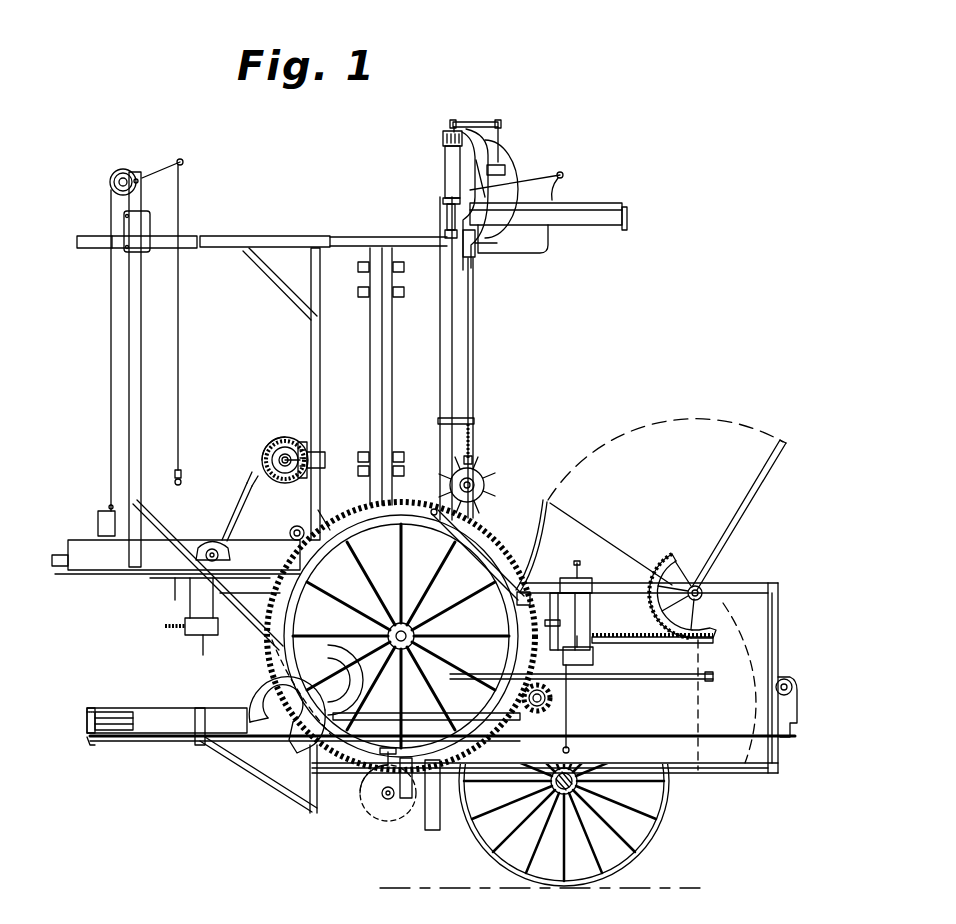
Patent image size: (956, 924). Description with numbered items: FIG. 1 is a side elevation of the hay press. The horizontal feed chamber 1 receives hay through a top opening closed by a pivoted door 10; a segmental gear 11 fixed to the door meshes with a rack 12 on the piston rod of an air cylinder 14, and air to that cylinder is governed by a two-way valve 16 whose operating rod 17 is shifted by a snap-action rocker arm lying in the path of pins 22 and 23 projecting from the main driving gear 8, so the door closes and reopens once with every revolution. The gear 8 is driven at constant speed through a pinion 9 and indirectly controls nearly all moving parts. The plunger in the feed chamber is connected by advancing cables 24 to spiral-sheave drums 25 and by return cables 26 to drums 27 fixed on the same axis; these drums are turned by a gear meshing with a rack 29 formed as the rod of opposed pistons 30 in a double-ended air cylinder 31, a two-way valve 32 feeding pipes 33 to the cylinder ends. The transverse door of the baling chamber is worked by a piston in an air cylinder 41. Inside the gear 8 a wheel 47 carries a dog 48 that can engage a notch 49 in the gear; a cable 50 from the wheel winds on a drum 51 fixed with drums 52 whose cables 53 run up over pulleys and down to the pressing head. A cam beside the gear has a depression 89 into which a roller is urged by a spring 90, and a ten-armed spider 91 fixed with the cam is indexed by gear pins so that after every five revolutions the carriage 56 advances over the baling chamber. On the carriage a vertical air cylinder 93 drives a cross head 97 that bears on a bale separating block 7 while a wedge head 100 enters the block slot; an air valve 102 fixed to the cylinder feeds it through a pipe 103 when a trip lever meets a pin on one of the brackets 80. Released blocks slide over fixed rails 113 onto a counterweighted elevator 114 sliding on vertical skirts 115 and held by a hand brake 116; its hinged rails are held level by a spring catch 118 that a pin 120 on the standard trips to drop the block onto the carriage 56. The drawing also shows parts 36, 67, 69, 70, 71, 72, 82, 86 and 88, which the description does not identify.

The horizontal feed chamber 1 is at (738, 605).
The bale separating blocks 7 is at (168, 249).
The main driving gear 8 is at (500, 548).
The pinion 9 is at (553, 700).
The door 10 is at (760, 488).
The segmental gear 11 is at (665, 562).
The rack 12 is at (658, 641).
The air cylinder 14 is at (578, 630).
The two-way valve 16 is at (580, 580).
The operating rod 17 is at (532, 580).
The pin 22 is at (403, 505).
The pin 23 is at (293, 567).
The advancing cables 24 is at (690, 681).
The drums 25 is at (300, 648).
The retracting or return cables 26 is at (715, 740).
The drums 27 is at (277, 740).
The rack 29 is at (126, 718).
The opposed pistons 30 is at (102, 710).
The double ended air cylinder 31 is at (170, 724).
The two-way air control valve 32 is at (595, 657).
The pipes 33 is at (200, 746).
The rack post 36 is at (337, 514).
The air cylinder 41 is at (434, 822).
The wheel 47 is at (287, 618).
The dog 48 is at (372, 757).
The notch 49 is at (477, 554).
The cable 50 is at (383, 812).
The drum 51 is at (406, 800).
The drums 52 is at (370, 802).
The cables 53 is at (385, 594).
The carriage 56 is at (63, 557).
The bevel pinion 67 is at (306, 442).
The gear shaft 69 is at (285, 476).
The gear wheel 70 is at (265, 455).
The gear housing 71 is at (272, 440).
The hand lever 72 is at (235, 507).
The brackets 80 is at (572, 208).
The arm bracket 82 is at (522, 236).
The vertical column 86 is at (474, 342).
The star wheel 88 is at (488, 482).
The depression 89 is at (482, 465).
The spring 90 is at (472, 427).
The ten-armed spider 91 is at (488, 493).
The air cylinder 93 is at (447, 168).
The cross head 97 is at (448, 214).
The wedge head 100 is at (447, 233).
The air valve 102 is at (505, 168).
The pipe 103 is at (480, 122).
The fixed rails 113 is at (243, 252).
The counterweighted elevator structure 114 is at (142, 230).
The vertical skirts 115 is at (135, 393).
The hand actuated brake structure 116 is at (150, 178).
The spring catch 118 is at (126, 243).
The pin 120 is at (106, 509).